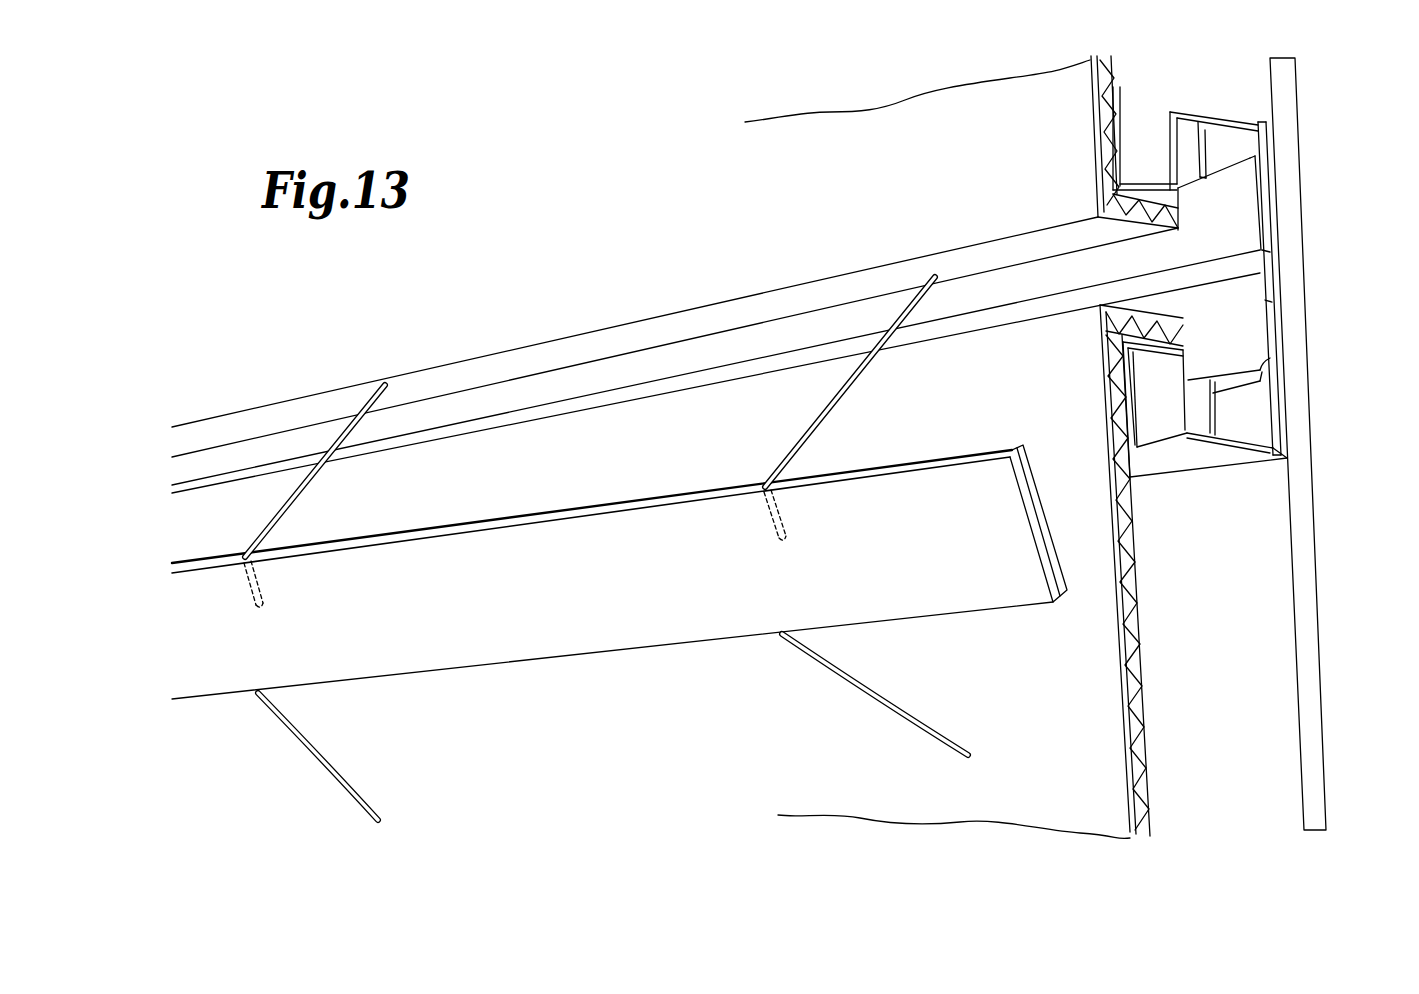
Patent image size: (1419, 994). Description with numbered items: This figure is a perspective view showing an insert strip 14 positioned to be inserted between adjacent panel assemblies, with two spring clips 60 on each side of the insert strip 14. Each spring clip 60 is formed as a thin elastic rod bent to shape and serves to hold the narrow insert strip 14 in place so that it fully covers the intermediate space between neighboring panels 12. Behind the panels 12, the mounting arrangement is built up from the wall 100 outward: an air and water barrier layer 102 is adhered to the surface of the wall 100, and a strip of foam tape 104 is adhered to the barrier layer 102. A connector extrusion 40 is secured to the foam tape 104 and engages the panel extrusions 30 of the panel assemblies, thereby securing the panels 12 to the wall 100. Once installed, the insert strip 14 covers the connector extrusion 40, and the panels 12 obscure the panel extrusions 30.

The panel 12 is at (1047, 168).
The insert strip 14 is at (638, 590).
The panel extrusion 30 is at (1212, 110).
The connector extrusion 40 is at (1234, 220).
The spring clip 60 is at (262, 526).
The wall 100 is at (1301, 483).
The air and water barrier layer 102 is at (1237, 591).
The strip of foam tape 104 is at (1273, 160).